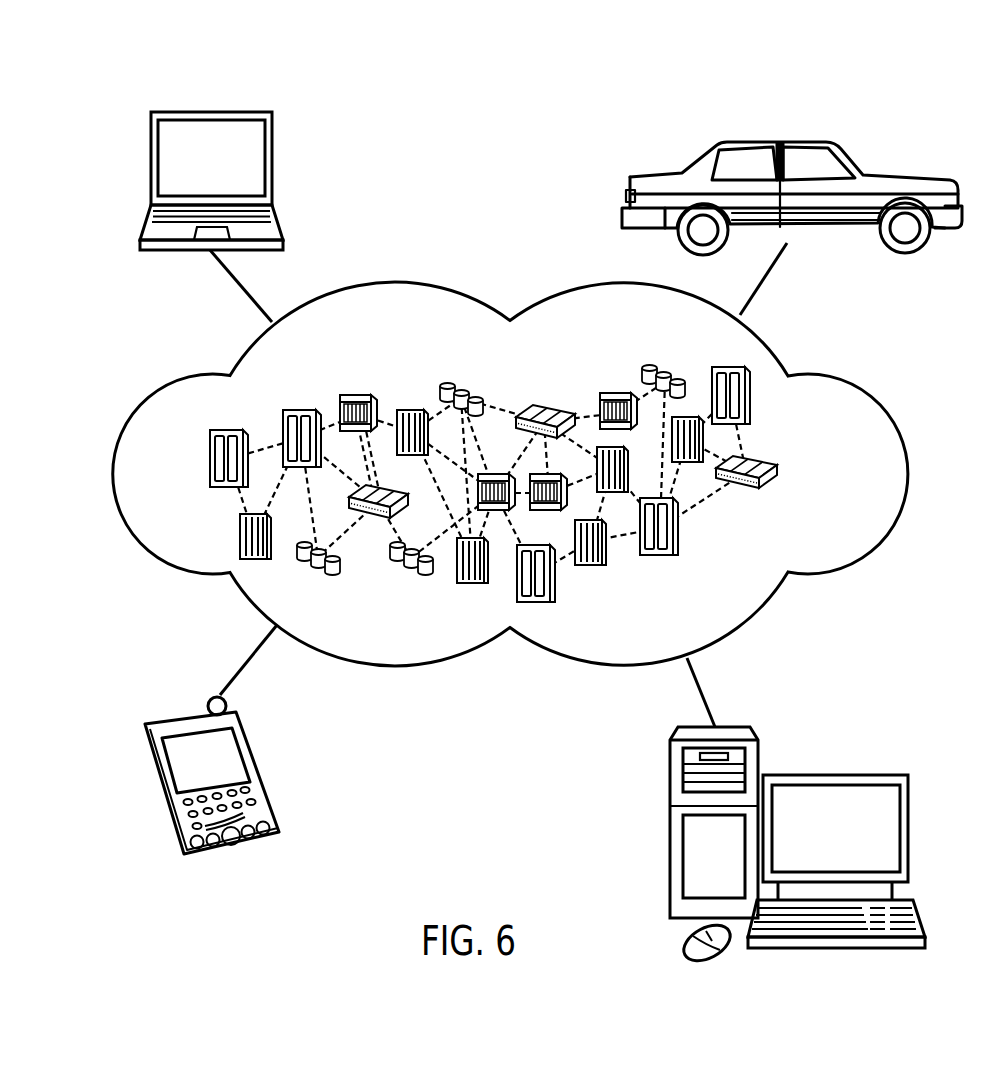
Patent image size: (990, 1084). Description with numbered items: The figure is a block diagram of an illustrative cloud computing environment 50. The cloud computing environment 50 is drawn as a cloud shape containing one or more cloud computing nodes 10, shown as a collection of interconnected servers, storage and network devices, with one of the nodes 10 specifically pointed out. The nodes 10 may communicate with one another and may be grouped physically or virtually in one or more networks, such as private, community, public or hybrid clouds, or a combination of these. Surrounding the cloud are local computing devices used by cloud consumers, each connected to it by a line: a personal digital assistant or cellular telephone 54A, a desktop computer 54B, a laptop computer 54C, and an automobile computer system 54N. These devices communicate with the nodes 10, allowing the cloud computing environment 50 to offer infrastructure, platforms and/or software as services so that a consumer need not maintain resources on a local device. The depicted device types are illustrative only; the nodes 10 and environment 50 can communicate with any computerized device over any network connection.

The cloud computing node 10 is at (786, 473).
The cloud computing environment 50 is at (846, 383).
The personal digital assistant or cellular telephone 54A is at (190, 712).
The desktop computer 54B is at (835, 775).
The laptop computer 54C is at (210, 110).
The automobile computer system 54N is at (770, 140).